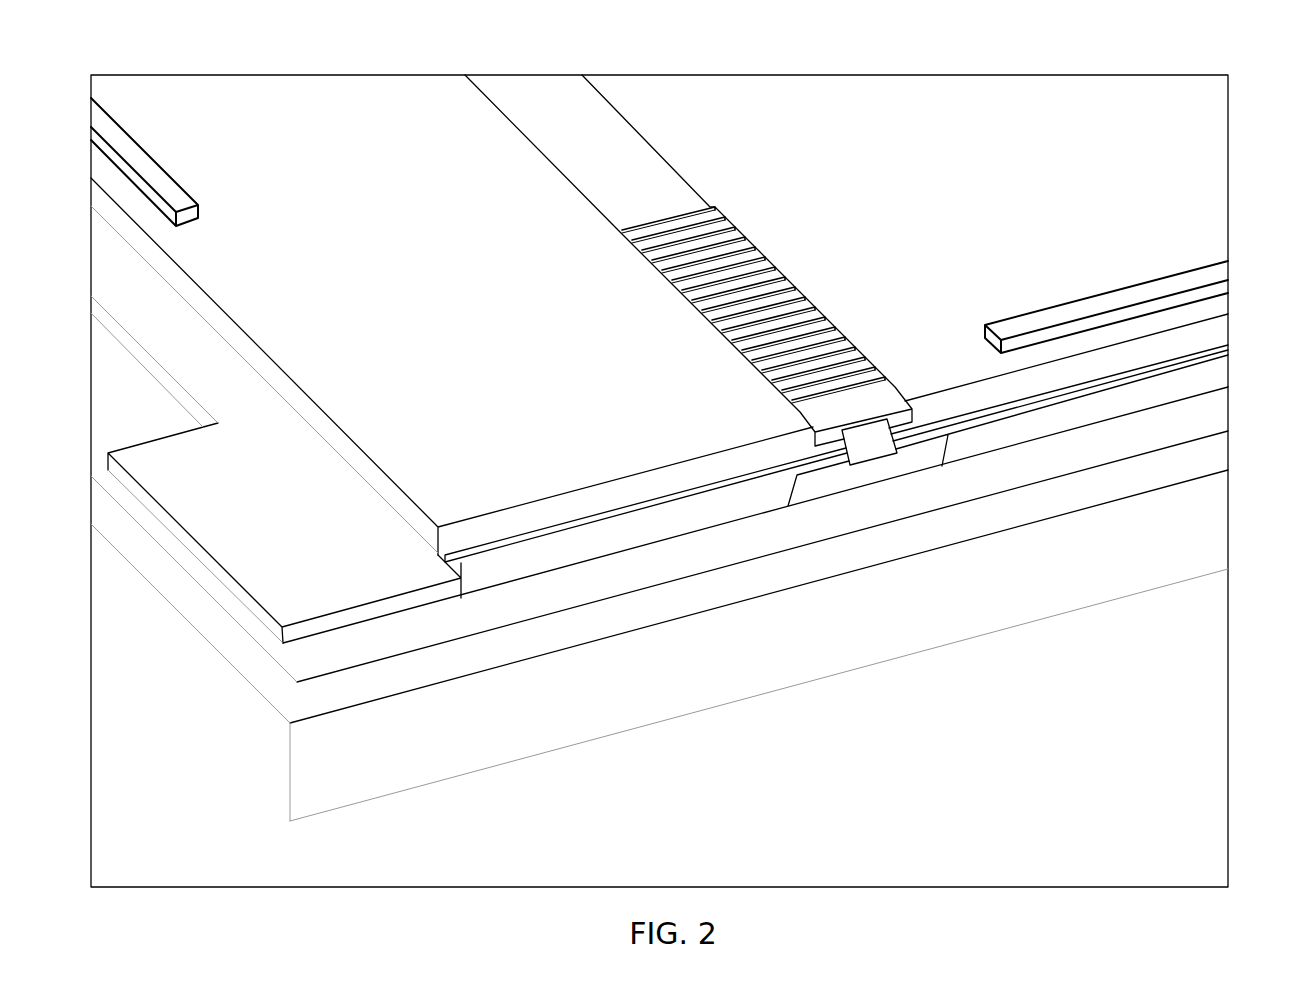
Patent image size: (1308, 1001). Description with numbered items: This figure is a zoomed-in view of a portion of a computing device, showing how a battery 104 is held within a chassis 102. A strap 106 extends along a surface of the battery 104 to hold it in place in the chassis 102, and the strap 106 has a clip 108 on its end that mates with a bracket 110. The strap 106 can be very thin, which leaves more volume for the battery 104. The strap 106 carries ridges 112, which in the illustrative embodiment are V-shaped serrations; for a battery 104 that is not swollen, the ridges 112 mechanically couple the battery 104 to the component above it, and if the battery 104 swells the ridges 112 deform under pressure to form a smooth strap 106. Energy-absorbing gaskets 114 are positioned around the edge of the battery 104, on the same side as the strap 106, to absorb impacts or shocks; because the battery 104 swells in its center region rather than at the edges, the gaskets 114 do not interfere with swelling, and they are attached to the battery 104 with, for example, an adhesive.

The chassis 102 is at (207, 716).
The battery 104 is at (488, 455).
The strap 106 is at (602, 148).
The clip 108 is at (878, 440).
The bracket 110 is at (1080, 415).
The ridges 112 is at (775, 275).
The energy-absorbing gaskets 114 is at (123, 160).